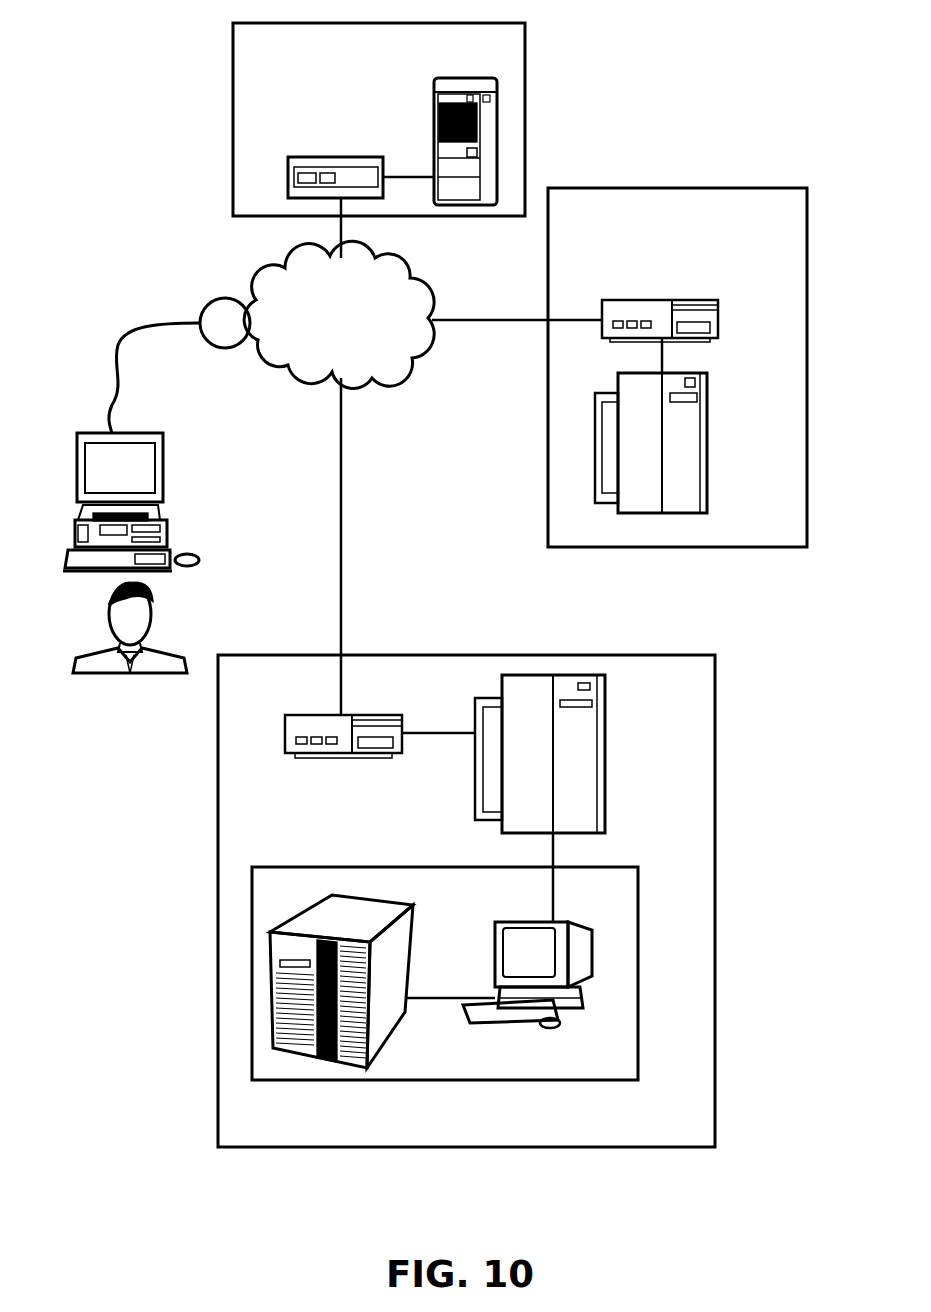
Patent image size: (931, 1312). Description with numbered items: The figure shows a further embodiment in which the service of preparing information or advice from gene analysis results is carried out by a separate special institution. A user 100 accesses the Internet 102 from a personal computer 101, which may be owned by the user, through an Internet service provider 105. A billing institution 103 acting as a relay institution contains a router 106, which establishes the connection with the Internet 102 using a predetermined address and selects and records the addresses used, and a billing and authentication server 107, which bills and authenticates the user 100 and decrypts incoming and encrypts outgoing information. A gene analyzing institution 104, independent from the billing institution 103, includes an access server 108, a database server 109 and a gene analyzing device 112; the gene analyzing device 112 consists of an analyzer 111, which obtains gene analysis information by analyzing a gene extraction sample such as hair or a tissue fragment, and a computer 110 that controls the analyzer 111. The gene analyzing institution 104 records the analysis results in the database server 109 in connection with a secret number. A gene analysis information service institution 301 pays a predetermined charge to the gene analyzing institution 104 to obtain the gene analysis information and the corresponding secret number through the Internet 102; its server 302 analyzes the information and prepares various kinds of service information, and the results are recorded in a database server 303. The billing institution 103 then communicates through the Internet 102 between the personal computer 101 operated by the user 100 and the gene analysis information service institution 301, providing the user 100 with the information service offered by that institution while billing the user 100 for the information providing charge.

The user 100 is at (160, 650).
The personal computer 101 is at (165, 509).
The Internet 102 is at (325, 338).
The billing institution 103 is at (233, 73).
The gene analyzing institution 104 is at (520, 1148).
The Internet service provider (ISP) 105 is at (226, 297).
The router 106 is at (330, 157).
The billing and authentication server 107 is at (463, 78).
The access server 108 is at (318, 713).
The database server 109 is at (605, 758).
The computer 110 is at (530, 918).
The analyzer 111 is at (415, 937).
The gene analyzing device 112 is at (393, 866).
The gene analysis information service institution 301 is at (655, 188).
The server 302 is at (718, 320).
The database server 303 is at (707, 433).